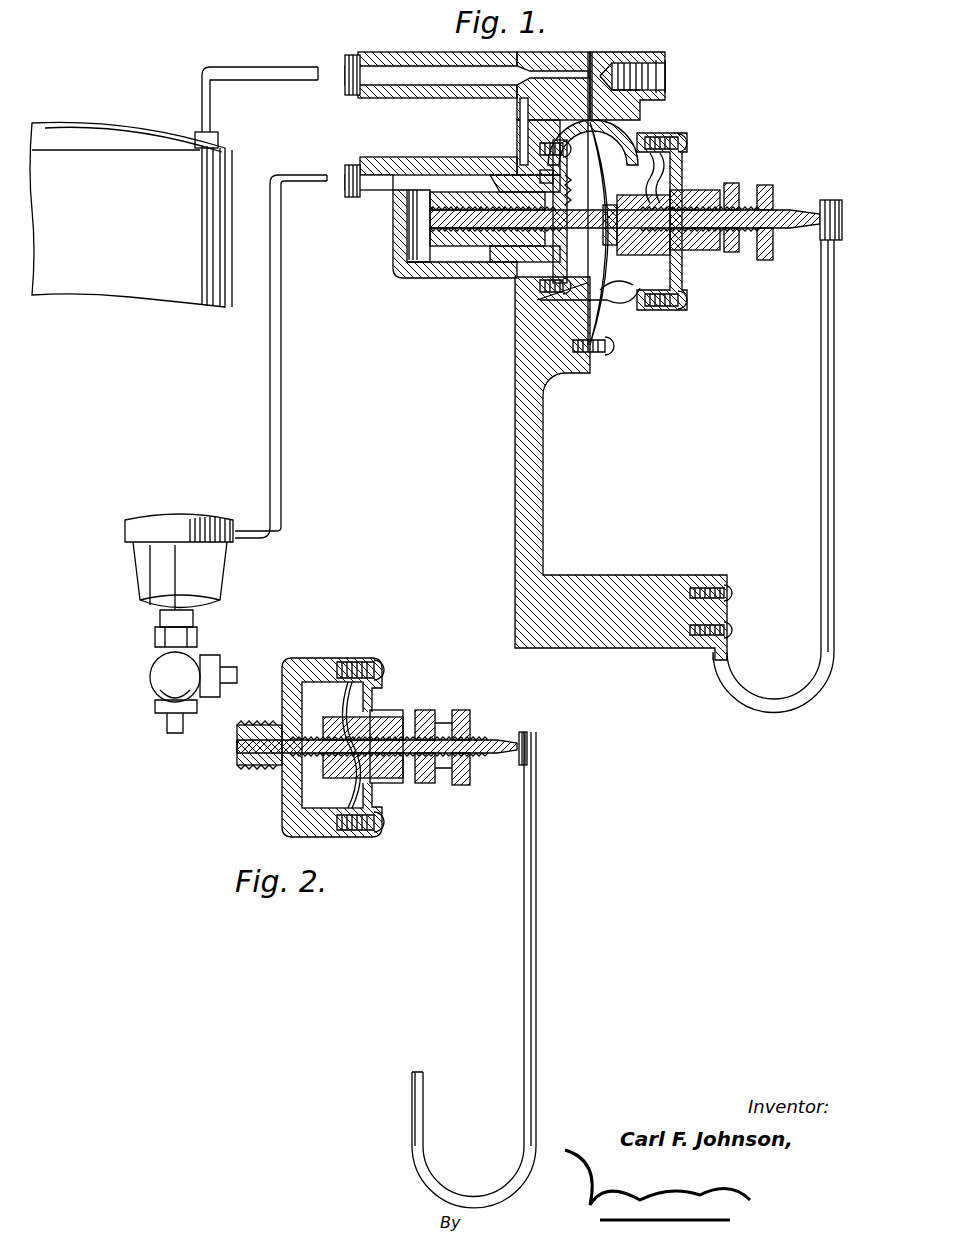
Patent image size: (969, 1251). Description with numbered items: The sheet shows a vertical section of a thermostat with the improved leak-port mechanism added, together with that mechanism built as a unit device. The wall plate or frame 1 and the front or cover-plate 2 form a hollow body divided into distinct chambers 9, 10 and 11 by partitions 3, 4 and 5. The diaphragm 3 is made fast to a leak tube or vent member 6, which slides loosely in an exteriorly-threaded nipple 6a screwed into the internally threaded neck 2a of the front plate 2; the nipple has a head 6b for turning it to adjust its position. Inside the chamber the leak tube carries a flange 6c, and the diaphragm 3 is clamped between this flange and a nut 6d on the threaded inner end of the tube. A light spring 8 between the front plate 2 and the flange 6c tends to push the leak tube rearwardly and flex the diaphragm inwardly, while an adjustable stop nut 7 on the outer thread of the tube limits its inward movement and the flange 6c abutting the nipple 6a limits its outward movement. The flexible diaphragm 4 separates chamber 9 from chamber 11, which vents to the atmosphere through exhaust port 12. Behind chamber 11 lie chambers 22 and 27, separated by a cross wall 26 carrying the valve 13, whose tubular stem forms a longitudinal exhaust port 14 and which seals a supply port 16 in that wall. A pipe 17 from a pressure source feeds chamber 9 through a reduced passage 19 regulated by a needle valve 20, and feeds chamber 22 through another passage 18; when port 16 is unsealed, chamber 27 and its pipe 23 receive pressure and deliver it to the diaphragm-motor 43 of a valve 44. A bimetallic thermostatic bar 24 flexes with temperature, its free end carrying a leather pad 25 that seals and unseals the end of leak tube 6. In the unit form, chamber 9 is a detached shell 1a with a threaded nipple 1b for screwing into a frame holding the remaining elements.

In FIG. 1, the wall plate or frame 1 is at (520, 372).
In FIG. 2, the detached shell 1a is at (284, 702).
In FIG. 2, the threaded nipple 1b is at (237, 755).
In FIG. 1, the front or cover-plate 2 is at (667, 130).
In FIG. 2, the front or cover-plate 2 is at (382, 696).
In FIG. 1, the internally threaded neck 2a is at (707, 257).
In FIG. 1, the diaphragm 3 is at (682, 176).
In FIG. 2, the diaphragm 3 is at (343, 712).
In FIG. 1, the diaphragm 4 is at (597, 267).
In FIG. 1, the partition 5 is at (563, 182).
In FIG. 1, the leak tube or vent member 6 is at (790, 237).
In FIG. 2, the leak tube or vent member 6 is at (487, 760).
In FIG. 1, the exteriorly-threaded nipple 6a is at (712, 198).
In FIG. 2, the exteriorly-threaded nipple 6a is at (410, 785).
In FIG. 1, the head 6b is at (740, 190).
In FIG. 2, the head 6b is at (430, 710).
In FIG. 1, the flange 6c is at (647, 205).
In FIG. 1, the nut 6d is at (633, 240).
In FIG. 1, the adjustable stop nut 7 is at (773, 197).
In FIG. 2, the adjustable stop nut 7 is at (470, 712).
In FIG. 1, the light spring 8 is at (680, 163).
In FIG. 1, the chamber 9 is at (637, 332).
In FIG. 2, the chamber 9 is at (308, 773).
In FIG. 1, the chamber 10 is at (682, 285).
In FIG. 1, the exhaust chamber 11 is at (573, 303).
In FIG. 1, the exhaust port 12 is at (520, 323).
In FIG. 2, the exhaust port 12 is at (282, 822).
In FIG. 1, the valve 13 is at (430, 215).
In FIG. 1, the longitudinal exhaust port 14 is at (410, 237).
In FIG. 1, the supply port 16 is at (473, 188).
In FIG. 1, the pipe 17 is at (280, 80).
In FIG. 1, the port or passage 18 is at (525, 115).
In FIG. 1, the reduced port or passage 19 is at (615, 108).
In FIG. 1, the needle valve 20 is at (618, 68).
In FIG. 1, the chamber 22 is at (503, 262).
In FIG. 1, the pipe 23 is at (345, 190).
In FIG. 1, the bimetallic thermostatic bar 24 is at (823, 380).
In FIG. 1, the pad or facing 25 is at (826, 204).
In FIG. 2, the pad or facing 25 is at (522, 768).
In FIG. 1, the cross wall or partition 26 is at (473, 262).
In FIG. 1, the chamber 27 is at (447, 253).
In FIG. 1, the diaphragm-motor 43 is at (180, 517).
In FIG. 1, the valve 44 is at (158, 672).